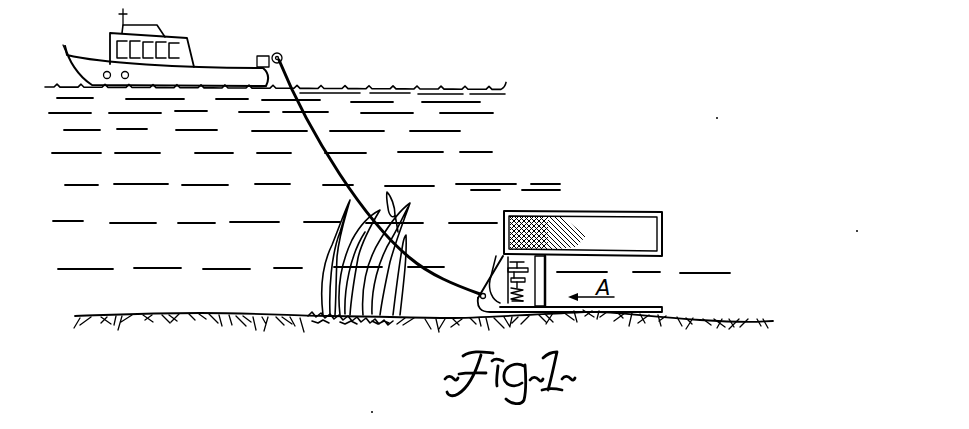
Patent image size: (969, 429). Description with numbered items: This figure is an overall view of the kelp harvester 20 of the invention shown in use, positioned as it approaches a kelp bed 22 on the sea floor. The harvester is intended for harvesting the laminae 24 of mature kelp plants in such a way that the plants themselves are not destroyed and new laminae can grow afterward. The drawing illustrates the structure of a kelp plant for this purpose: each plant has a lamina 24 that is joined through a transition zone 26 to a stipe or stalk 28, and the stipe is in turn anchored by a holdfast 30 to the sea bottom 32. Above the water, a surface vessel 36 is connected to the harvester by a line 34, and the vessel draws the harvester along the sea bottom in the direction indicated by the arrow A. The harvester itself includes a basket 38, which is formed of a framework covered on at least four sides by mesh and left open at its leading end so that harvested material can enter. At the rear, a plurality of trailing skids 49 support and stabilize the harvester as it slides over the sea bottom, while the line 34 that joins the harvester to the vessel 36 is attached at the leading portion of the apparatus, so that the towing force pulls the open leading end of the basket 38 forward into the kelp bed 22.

The kelp harvester 20 is at (594, 238).
The kelp bed 22 is at (309, 238).
The lamina 24 is at (397, 202).
The transition zone 26 is at (405, 281).
The stipe 28 is at (397, 308).
The holdfast 30 is at (353, 322).
The sea bottom 32 is at (203, 305).
The line 34 is at (443, 276).
The vessel 36 is at (197, 67).
The basket 38 is at (599, 205).
The trailing skids 49 is at (650, 307).